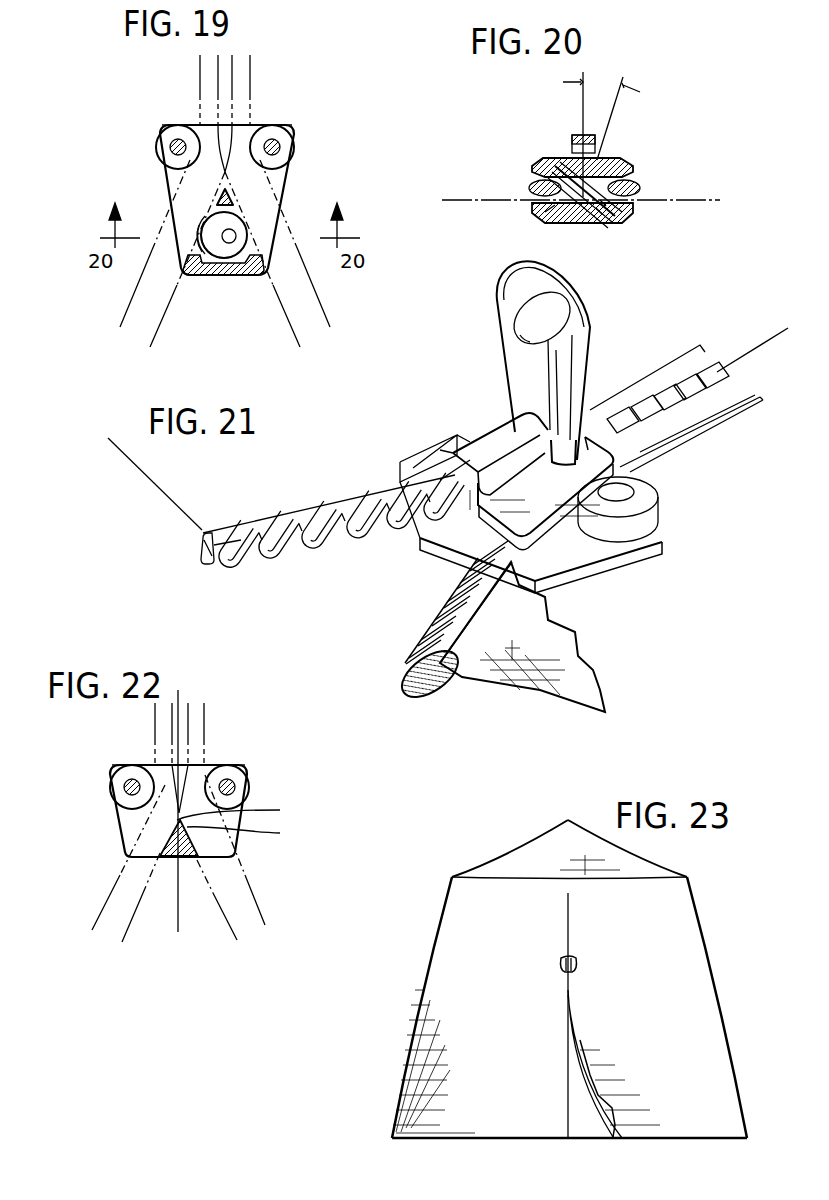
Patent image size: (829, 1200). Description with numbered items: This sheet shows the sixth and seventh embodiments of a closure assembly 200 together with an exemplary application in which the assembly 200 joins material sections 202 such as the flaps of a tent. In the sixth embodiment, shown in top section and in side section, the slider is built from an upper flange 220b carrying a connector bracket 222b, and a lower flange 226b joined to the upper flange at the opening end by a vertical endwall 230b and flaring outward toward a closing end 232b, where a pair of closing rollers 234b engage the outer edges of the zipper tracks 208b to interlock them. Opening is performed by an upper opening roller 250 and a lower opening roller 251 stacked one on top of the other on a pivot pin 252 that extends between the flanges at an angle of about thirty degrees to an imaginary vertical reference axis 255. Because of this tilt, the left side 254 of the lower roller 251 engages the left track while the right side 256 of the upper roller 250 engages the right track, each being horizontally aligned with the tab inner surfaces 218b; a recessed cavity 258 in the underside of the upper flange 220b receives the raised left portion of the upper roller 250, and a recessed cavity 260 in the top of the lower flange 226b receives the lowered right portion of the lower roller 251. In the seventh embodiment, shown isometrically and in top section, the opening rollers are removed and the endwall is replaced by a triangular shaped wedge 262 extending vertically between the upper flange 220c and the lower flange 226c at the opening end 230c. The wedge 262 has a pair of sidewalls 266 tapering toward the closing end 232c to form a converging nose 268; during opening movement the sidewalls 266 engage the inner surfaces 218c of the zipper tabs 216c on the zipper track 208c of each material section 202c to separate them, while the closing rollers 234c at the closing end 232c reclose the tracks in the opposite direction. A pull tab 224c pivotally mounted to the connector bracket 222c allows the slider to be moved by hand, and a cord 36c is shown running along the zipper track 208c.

In FIG. 21, the cord 36c is at (760, 338).
In FIG. 22, the cord 36c is at (180, 695).
In FIG. 23, the closure assembly 200 is at (588, 960).
In FIG. 23, the material sections 202 is at (569, 979).
In FIG. 21, the material section 202c is at (172, 492).
In FIG. 19, the zipper track 208b is at (250, 80).
In FIG. 20, the zipper track 208b is at (528, 194).
In FIG. 21, the zipper track 208c is at (715, 422).
In FIG. 22, the zipper track 208c is at (204, 724).
In FIG. 21, the zipper tabs 216c is at (290, 555).
In FIG. 20, the inner surfaces of the zipper tracks 218b is at (548, 215).
In FIG. 21, the inner surfaces of the zipper tabs 218c is at (248, 572).
In FIG. 20, the upper flange 220b is at (615, 160).
In FIG. 21, the upper flange 220c is at (597, 460).
In FIG. 20, the connector bracket 222b is at (574, 136).
In FIG. 21, the connector bracket 222c is at (440, 450).
In FIG. 21, the pull tab 224c is at (590, 328).
In FIG. 19, the lower flange 226b is at (280, 183).
In FIG. 20, the lower flange 226b is at (622, 215).
In FIG. 21, the lower flange 226c is at (593, 558).
In FIG. 22, the lower flange 226c is at (237, 842).
In FIG. 19, the vertical endwall 230b is at (218, 280).
In FIG. 21, the opening end 230c is at (440, 545).
In FIG. 22, the opening end 230c is at (187, 860).
In FIG. 19, the closing end 232b is at (257, 125).
In FIG. 21, the closing end 232c is at (658, 548).
In FIG. 22, the closing end 232c is at (204, 765).
In FIG. 19, the closing rollers 234b is at (294, 143).
In FIG. 21, the closing rollers 234c is at (655, 520).
In FIG. 22, the closing rollers 234c is at (243, 777).
In FIG. 19, the upper opening roller 250 is at (237, 262).
In FIG. 20, the upper opening roller 250 is at (565, 162).
In FIG. 19, the lower opening roller 251 is at (195, 240).
In FIG. 20, the lower opening roller 251 is at (604, 203).
In FIG. 19, the pivot pin 252 is at (237, 236).
In FIG. 20, the left side of the lower roller 254 is at (530, 188).
In FIG. 20, the vertical reference axis 255 is at (583, 92).
In FIG. 20, the right side of the upper roller 256 is at (632, 205).
In FIG. 20, the recessed cavity 258 is at (550, 172).
In FIG. 20, the recessed cavity 260 is at (604, 210).
In FIG. 21, the triangular shaped wedge 262 is at (440, 530).
In FIG. 22, the triangular shaped wedge 262 is at (193, 848).
In FIG. 22, the sidewalls 266 is at (280, 833).
In FIG. 22, the converging nose 268 is at (280, 810).